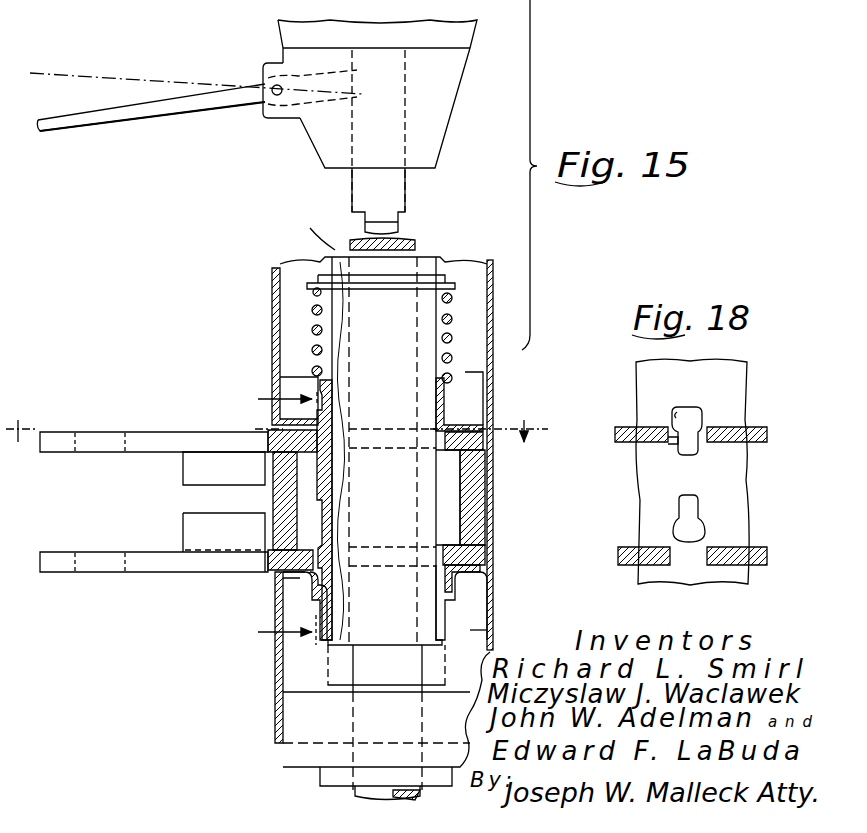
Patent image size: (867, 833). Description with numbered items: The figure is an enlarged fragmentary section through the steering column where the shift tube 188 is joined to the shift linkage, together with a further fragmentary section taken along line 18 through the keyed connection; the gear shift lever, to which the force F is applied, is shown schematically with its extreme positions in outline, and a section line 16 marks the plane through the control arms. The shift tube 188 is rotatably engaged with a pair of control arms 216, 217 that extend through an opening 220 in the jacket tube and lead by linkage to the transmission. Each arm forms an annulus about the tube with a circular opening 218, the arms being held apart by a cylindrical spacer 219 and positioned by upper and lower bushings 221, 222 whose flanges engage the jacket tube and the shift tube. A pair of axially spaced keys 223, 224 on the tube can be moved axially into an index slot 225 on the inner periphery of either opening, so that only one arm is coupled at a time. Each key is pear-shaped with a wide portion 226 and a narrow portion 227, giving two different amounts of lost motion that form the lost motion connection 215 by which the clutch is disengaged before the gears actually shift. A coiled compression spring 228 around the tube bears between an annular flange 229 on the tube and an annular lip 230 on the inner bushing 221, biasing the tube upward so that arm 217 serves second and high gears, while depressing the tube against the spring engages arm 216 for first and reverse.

In FIG. 15, the gear shift lever force F is at (188, 100).
In FIG. 15, the section line 16— 16 is at (277, 417).
In FIG. 15, the section line 18— 18 is at (276, 515).
In FIG. 15, the shift tube 188 is at (355, 208).
In FIG. 18, the shift tube 188 is at (640, 500).
In FIG. 15, the lost motion connection 215 is at (248, 421).
In FIG. 15, the control arm 216 is at (148, 573).
In FIG. 18, the control arm 216 is at (760, 546).
In FIG. 15, the control arm 217 is at (154, 431).
In FIG. 18, the control arm 217 is at (760, 428).
In FIG. 15, the circular opening 218 is at (450, 448).
In FIG. 15, the cylindrical spacer 219 is at (475, 527).
In FIG. 15, the opening 220 is at (298, 576).
In FIG. 15, the upper bushing 221 is at (493, 378).
In FIG. 15, the lower bushing 222 is at (492, 590).
In FIG. 15, the key 223 is at (330, 460).
In FIG. 18, the key 223 is at (704, 405).
In FIG. 15, the key 224 is at (330, 526).
In FIG. 18, the key 224 is at (708, 507).
In FIG. 15, the index slot 225 is at (334, 432).
In FIG. 18, the index slot 225 is at (675, 441).
In FIG. 18, the wide portion 226 is at (678, 412).
In FIG. 18, the narrow portion 227 is at (693, 453).
In FIG. 15, the coiled compression spring 228 is at (318, 311).
In FIG. 15, the annular flange 229 is at (462, 282).
In FIG. 15, the annular lip 230 is at (318, 374).